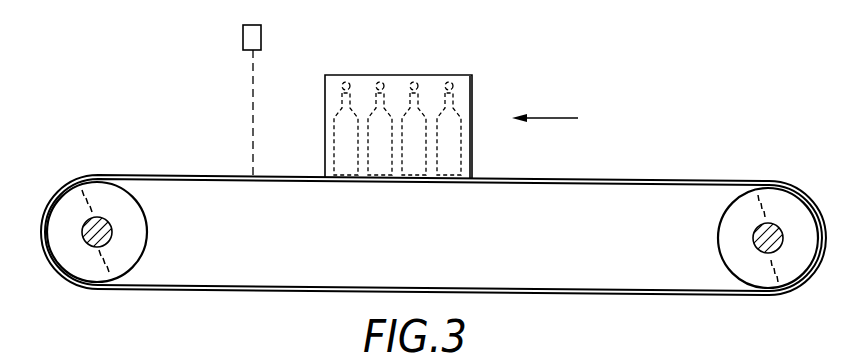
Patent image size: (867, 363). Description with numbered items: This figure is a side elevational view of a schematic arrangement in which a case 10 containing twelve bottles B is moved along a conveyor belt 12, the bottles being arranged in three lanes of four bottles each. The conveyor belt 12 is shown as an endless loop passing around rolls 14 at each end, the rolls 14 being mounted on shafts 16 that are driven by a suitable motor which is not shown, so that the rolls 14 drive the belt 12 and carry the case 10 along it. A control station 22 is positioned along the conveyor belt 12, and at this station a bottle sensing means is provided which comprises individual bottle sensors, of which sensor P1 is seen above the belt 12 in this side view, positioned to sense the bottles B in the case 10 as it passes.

The case 10 is at (472, 92).
The conveyor belt 12 is at (641, 170).
The rolls 14 is at (80, 267).
The shafts 16 is at (112, 228).
The control station 22 is at (314, 76).
The bottles B is at (456, 158).
The bottle sensor P1 is at (261, 37).